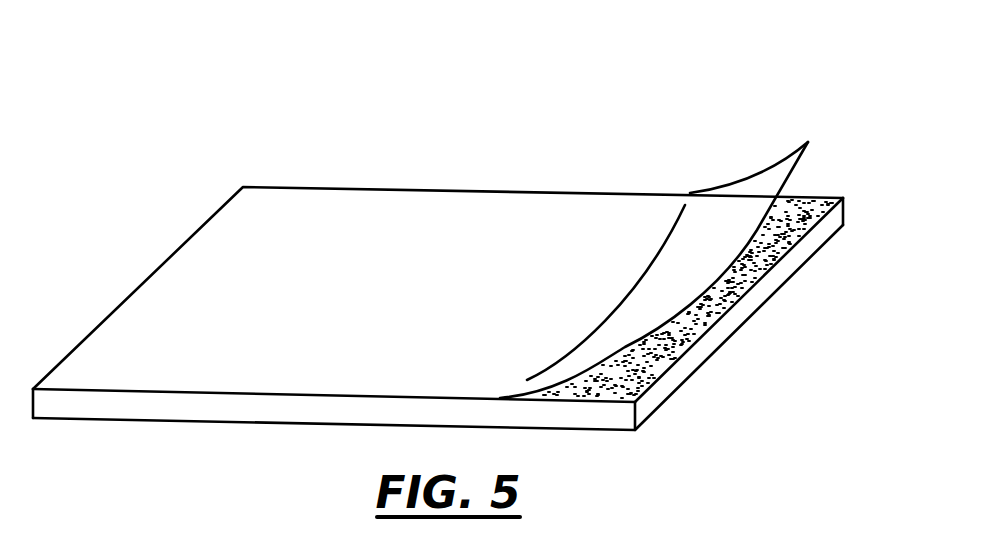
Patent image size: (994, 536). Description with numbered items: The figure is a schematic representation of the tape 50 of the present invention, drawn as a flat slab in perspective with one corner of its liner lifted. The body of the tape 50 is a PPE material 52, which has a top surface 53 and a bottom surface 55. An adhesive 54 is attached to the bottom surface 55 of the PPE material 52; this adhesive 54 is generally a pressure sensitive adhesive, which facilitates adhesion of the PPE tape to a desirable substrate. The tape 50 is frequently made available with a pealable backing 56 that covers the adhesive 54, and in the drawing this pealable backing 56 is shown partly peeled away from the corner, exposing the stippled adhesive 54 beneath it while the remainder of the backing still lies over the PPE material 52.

The tape 50 is at (474, 231).
The PPE material 52 is at (775, 290).
The top surface 53 is at (733, 335).
The adhesive 54 is at (823, 196).
The bottom surface 55 is at (787, 238).
The pealable backing 56 is at (654, 237).